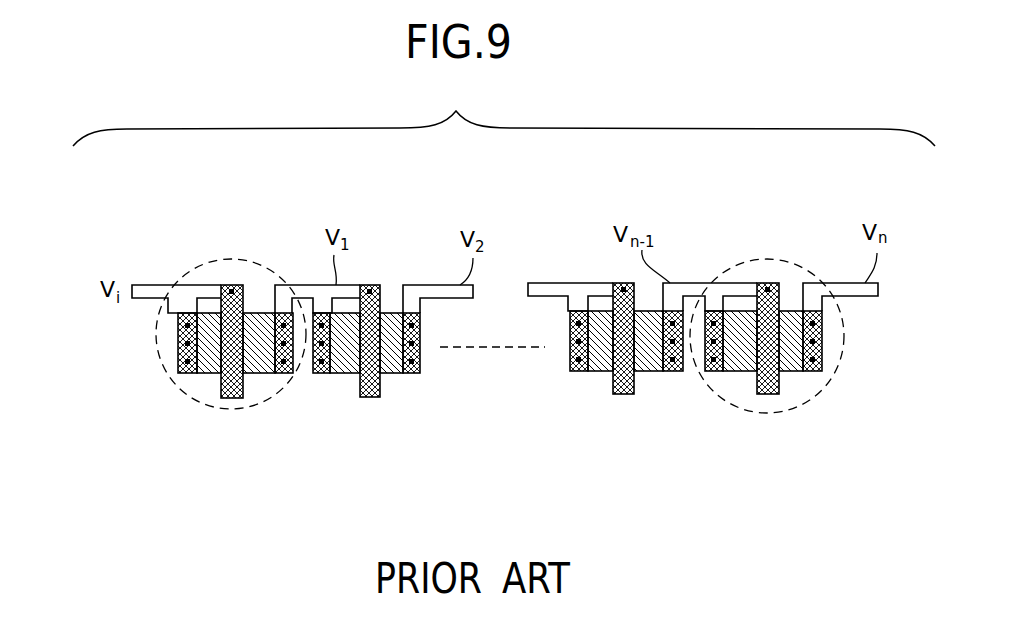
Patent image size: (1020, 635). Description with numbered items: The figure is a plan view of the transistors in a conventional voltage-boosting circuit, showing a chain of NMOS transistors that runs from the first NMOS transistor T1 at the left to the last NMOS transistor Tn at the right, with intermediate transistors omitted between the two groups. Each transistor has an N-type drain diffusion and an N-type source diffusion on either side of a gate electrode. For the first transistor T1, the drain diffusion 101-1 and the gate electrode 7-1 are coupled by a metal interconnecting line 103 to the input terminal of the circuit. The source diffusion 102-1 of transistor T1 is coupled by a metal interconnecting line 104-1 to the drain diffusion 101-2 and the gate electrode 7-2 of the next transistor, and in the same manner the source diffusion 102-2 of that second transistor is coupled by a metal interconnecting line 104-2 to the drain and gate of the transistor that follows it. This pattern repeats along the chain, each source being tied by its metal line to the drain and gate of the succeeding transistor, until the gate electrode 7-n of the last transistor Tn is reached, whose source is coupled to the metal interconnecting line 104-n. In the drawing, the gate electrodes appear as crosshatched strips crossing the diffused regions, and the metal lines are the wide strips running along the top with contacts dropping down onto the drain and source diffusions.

The metal interconnecting line 103 is at (163, 285).
The metal interconnecting line 104-1 is at (303, 285).
The metal interconnecting line 104-2 is at (413, 285).
The metal interconnecting line 104-n is at (827, 283).
The gate electrode 7-1 is at (233, 398).
The gate electrode 7-2 is at (373, 397).
The gate electrode 7-n is at (768, 394).
The N-type drain diffusion 101-1 is at (207, 375).
The N-type drain diffusion 101-2 is at (350, 375).
The N-type source diffusion 102-1 is at (258, 375).
The N-type source diffusion 102-2 is at (392, 375).
The first NMOS transistor T1 is at (230, 259).
The last NMOS transistor Tn is at (780, 257).